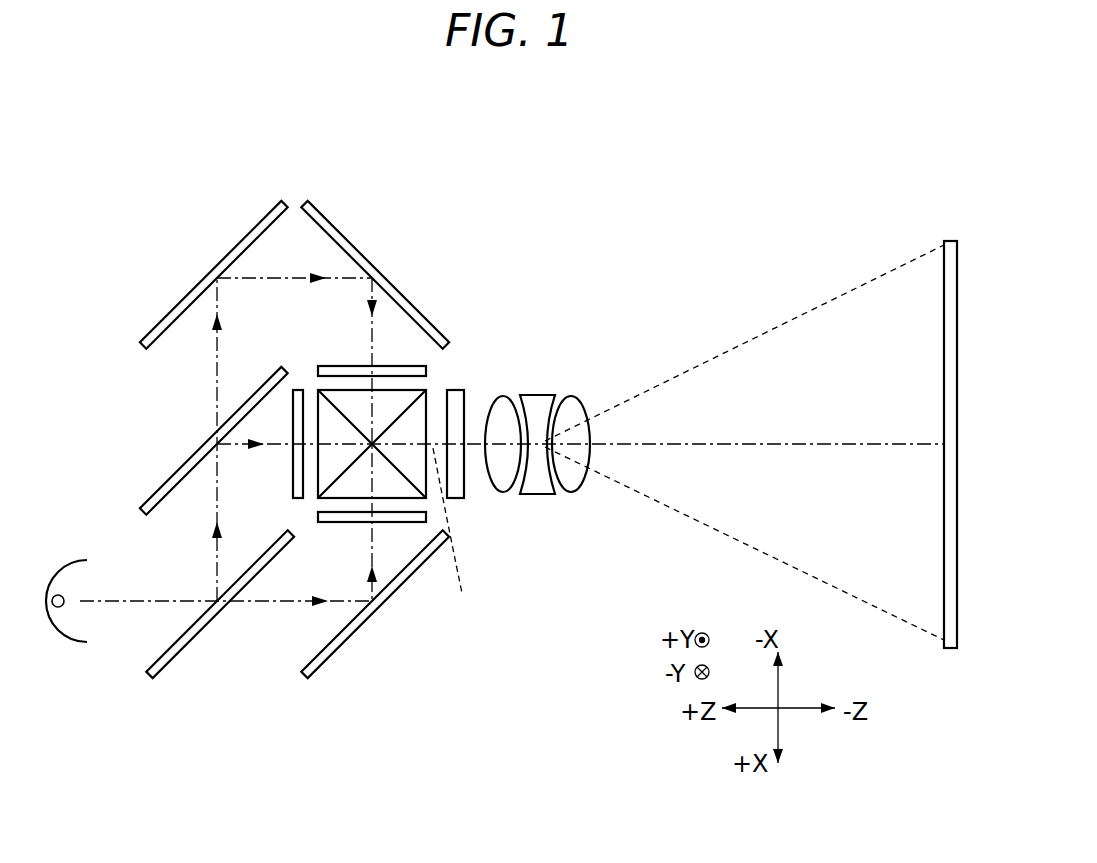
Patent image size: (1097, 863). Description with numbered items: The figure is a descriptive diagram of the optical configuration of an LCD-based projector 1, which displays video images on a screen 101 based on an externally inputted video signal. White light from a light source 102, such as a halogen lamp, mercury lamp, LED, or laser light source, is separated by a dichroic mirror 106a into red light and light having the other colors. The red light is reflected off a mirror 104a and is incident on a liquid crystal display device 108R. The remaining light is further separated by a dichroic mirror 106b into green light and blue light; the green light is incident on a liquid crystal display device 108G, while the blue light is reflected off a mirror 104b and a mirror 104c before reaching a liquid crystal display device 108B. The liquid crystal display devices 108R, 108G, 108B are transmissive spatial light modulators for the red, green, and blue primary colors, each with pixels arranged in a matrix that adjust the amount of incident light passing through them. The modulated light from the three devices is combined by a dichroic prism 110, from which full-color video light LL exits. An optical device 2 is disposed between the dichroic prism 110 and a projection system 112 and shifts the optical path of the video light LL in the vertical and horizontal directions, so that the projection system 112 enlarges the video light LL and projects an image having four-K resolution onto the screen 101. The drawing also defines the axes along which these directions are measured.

The projector 1 is at (804, 168).
The optical device 2 is at (466, 480).
The screen 101 is at (950, 650).
The light source 102 is at (62, 641).
The mirror 104a is at (337, 652).
The mirror 104b is at (235, 243).
The mirror 104c is at (355, 243).
The dichroic mirror 106a is at (182, 653).
The dichroic mirror 106b is at (163, 478).
The liquid crystal display device 108B is at (428, 368).
The liquid crystal display device 108G is at (290, 463).
The liquid crystal display device 108R is at (338, 525).
The dichroic prism 110 is at (428, 395).
The projection system 112 is at (588, 500).
The video light LL is at (455, 539).